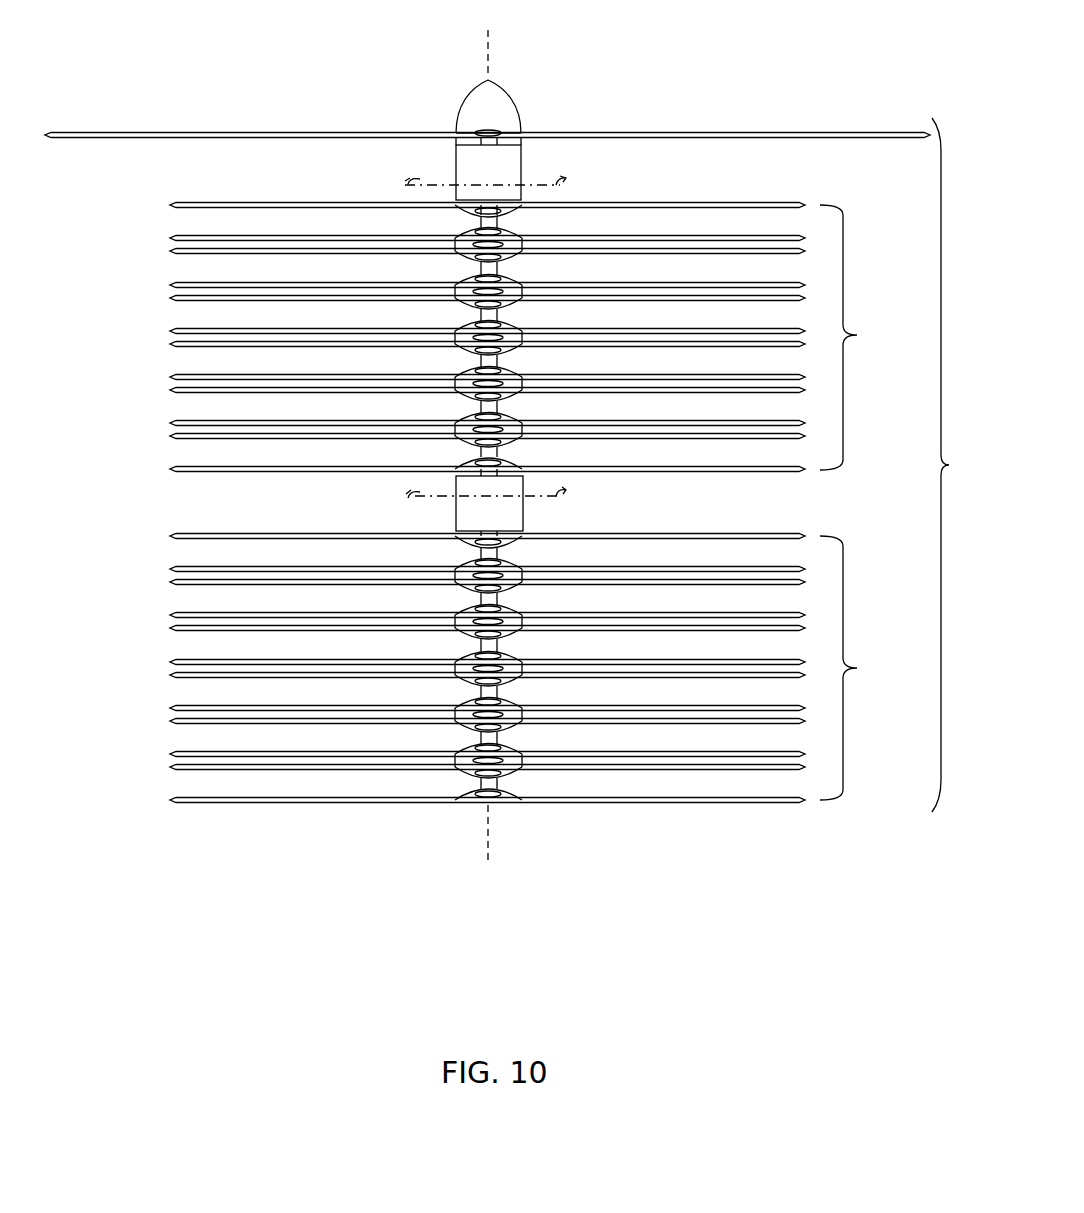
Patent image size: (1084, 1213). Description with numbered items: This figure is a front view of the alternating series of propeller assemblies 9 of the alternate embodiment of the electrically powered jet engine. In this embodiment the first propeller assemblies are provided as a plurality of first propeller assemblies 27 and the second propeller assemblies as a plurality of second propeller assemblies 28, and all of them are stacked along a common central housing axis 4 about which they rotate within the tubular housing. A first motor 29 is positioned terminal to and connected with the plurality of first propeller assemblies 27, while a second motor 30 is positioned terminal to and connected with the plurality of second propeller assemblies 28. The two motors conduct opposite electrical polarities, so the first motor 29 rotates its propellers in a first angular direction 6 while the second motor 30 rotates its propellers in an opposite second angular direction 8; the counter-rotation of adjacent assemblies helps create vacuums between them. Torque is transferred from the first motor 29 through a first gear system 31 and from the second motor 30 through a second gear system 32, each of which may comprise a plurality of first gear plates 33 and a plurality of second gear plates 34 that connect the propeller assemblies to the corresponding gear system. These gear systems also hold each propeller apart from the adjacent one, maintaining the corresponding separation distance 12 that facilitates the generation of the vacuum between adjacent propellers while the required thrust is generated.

The central housing axis 4 is at (487, 52).
The first angular direction 6 is at (568, 182).
The second angular direction 8 is at (416, 494).
The alternating series of propeller assemblies 9 is at (504, 465).
The corresponding separation distance 12 is at (163, 282).
The plurality of first propeller assemblies 27 is at (855, 337).
The plurality of second propeller assemblies 28 is at (855, 668).
The first motor 29 is at (460, 154).
The second motor 30 is at (478, 516).
The first gear system 31 is at (470, 560).
The second gear system 32 is at (470, 276).
The plurality of first gear plates 33 is at (512, 258).
The plurality of second gear plates 34 is at (452, 335).